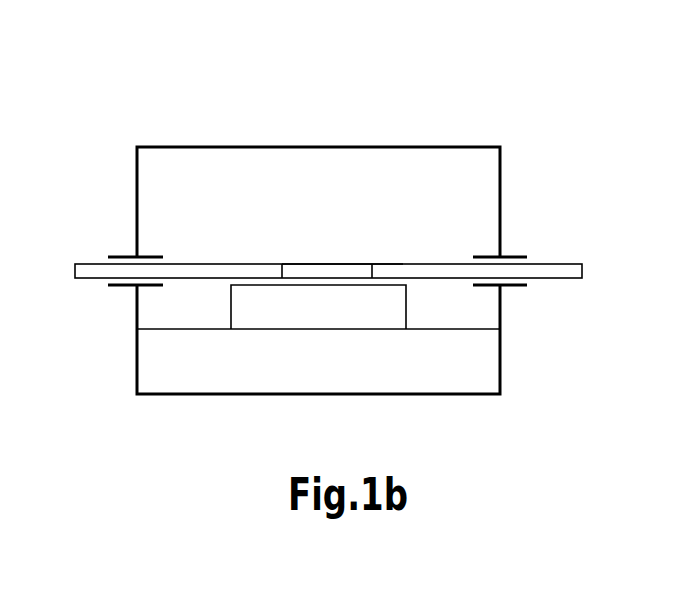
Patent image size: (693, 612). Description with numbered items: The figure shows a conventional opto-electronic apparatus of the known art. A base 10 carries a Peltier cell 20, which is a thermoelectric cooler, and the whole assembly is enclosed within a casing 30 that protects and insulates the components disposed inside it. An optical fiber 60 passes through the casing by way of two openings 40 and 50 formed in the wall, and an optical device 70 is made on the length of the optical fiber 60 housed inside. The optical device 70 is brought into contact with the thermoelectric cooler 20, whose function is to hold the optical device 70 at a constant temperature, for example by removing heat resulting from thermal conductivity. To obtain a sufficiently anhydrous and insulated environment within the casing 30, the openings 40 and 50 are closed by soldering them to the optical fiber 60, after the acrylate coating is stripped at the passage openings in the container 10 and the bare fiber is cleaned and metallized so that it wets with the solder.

The base 10 is at (465, 373).
The Peltier cell 20 is at (265, 312).
The casing 30 is at (432, 145).
The opening 40 is at (515, 248).
The opening 50 is at (122, 256).
The optical fiber 60 is at (552, 278).
The optical device 70 is at (403, 264).